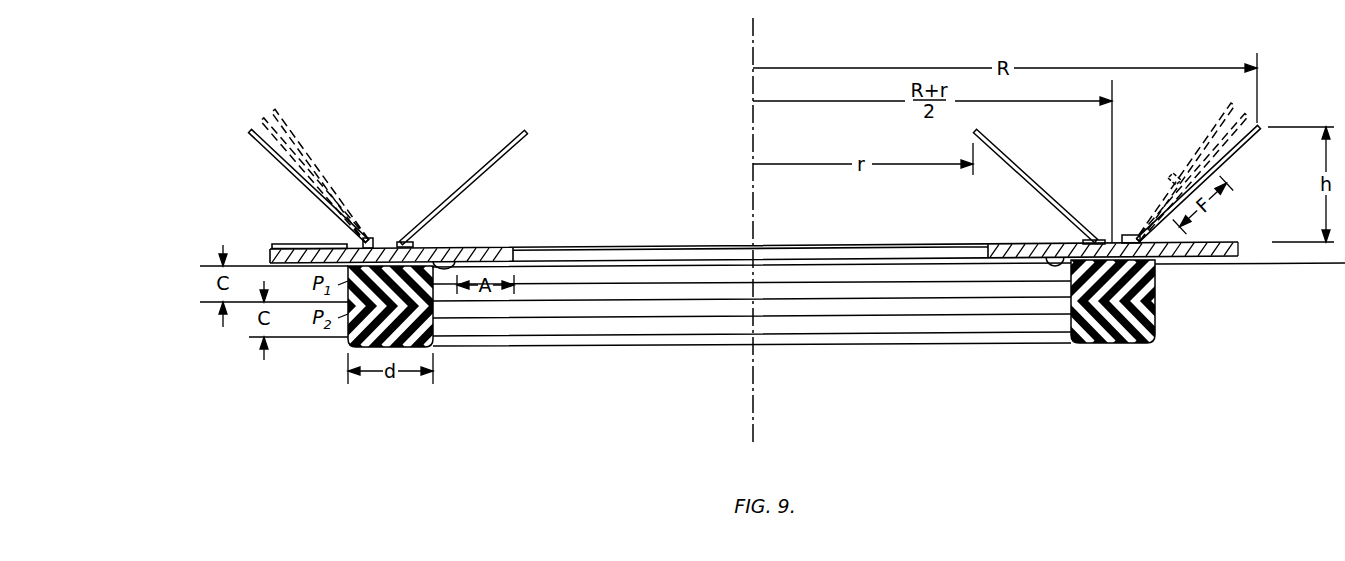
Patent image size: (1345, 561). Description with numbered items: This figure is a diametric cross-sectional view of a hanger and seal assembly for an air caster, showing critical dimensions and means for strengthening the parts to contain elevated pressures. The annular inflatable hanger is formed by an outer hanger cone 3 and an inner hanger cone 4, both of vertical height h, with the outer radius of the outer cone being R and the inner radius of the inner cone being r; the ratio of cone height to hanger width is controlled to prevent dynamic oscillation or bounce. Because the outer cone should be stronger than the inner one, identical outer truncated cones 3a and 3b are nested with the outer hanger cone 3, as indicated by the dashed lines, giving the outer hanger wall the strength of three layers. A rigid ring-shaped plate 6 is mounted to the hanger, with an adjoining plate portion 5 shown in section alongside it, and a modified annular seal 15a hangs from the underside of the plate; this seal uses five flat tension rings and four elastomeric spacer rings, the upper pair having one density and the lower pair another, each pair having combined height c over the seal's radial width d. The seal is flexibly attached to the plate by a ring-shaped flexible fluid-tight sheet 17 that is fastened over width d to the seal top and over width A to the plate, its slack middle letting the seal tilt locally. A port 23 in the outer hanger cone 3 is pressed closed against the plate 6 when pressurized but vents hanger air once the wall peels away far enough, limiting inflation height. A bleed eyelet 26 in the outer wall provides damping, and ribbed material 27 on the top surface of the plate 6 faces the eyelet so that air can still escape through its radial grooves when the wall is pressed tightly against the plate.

The outer hanger cone 3 is at (1228, 158).
The outer truncated cone 3a is at (1248, 113).
The outer truncated cone 3b is at (1218, 120).
The inner hanger cone 4 is at (1013, 170).
The support plate 5 is at (1008, 243).
The rigid ring-shaped plate 6 is at (1196, 258).
The annular seal 15a is at (1157, 302).
The ring-shaped flexible fluid-tight sheet 17 is at (1057, 262).
The port 23 is at (1170, 182).
The bleed eyelet 26 is at (300, 186).
The ribbed material 27 is at (306, 244).